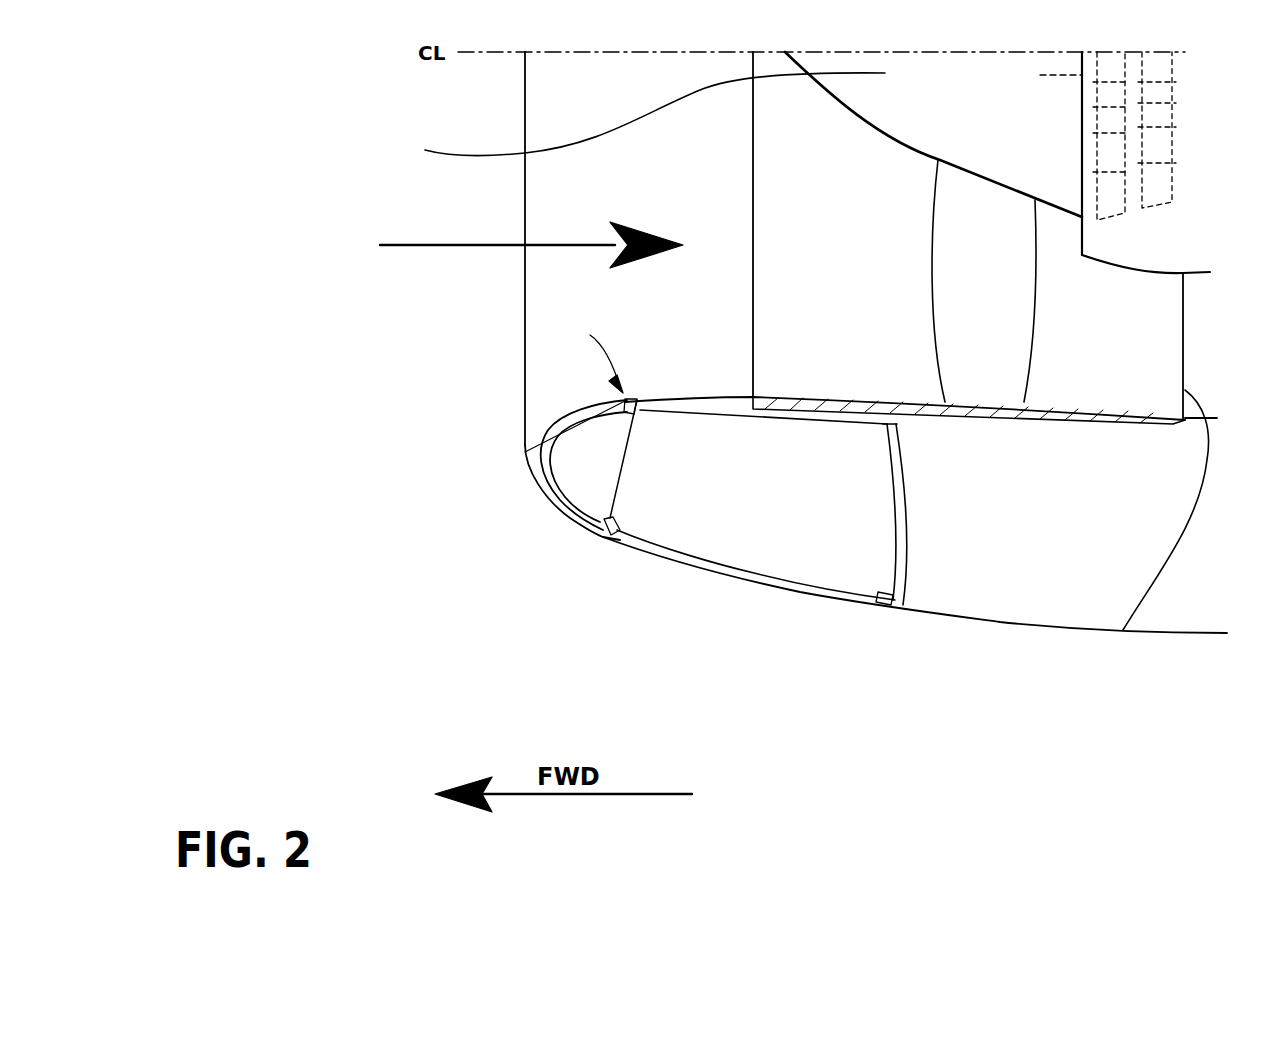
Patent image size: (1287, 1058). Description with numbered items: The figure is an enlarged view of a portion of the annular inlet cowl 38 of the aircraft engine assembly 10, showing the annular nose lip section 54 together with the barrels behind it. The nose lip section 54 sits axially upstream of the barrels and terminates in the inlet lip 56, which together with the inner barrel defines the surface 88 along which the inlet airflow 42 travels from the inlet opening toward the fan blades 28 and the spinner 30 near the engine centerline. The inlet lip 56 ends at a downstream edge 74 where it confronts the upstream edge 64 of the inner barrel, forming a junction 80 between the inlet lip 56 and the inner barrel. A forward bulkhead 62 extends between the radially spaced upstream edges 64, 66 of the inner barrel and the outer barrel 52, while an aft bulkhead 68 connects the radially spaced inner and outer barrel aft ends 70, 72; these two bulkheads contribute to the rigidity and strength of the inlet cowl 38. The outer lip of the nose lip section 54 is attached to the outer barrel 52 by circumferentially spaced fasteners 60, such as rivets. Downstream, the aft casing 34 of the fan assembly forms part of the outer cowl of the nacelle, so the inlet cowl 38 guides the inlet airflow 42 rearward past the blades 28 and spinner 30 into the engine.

The aircraft engine assembly 10 is at (1008, 765).
The fan blades 28 is at (1004, 366).
The spinner 30 is at (637, 114).
The aft casing 34 is at (1123, 630).
The annular inlet cowl 38 is at (750, 580).
The inlet airflow 42 is at (478, 245).
The outer barrel 52 is at (837, 583).
The annular nose lip section 54 is at (563, 475).
The inlet lip 56 is at (622, 401).
The fasteners 60 is at (623, 540).
The forward bulkhead 62 is at (624, 477).
The upstream edge of inner barrel 64 is at (523, 453).
The upstream edge of outer barrel 66 is at (614, 530).
The aft bulkhead 68 is at (900, 516).
The inner barrel aft end 70 is at (885, 432).
The outer barrel aft end 72 is at (880, 600).
The downstream edge of inlet lip 74 is at (637, 398).
The junction 80 is at (589, 356).
The surface 88 is at (720, 400).